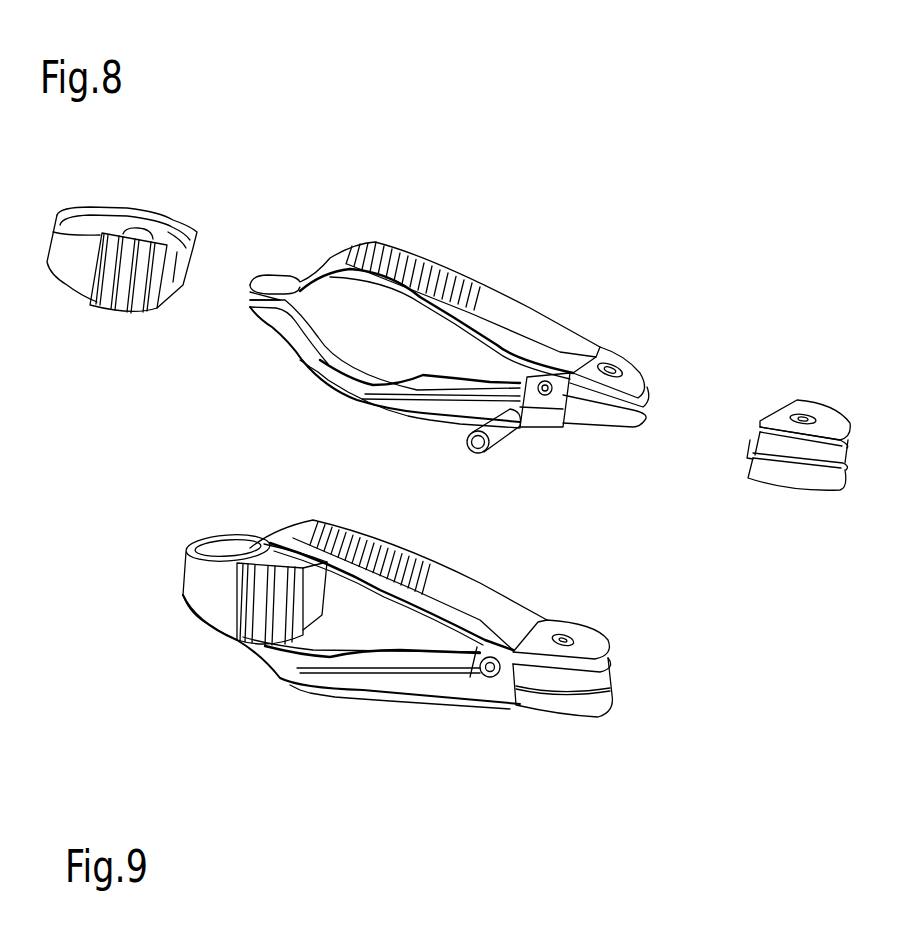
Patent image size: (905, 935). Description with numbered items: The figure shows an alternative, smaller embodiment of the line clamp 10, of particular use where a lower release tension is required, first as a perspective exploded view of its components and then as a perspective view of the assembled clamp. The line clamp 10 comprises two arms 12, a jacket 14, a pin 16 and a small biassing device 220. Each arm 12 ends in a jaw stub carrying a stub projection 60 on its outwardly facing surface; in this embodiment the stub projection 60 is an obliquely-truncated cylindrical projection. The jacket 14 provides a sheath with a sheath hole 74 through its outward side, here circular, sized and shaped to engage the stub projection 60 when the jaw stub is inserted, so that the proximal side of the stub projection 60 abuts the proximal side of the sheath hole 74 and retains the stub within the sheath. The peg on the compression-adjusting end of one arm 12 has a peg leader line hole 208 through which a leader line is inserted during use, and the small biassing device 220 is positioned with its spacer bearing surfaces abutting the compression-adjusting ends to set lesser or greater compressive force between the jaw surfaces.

In FIG. 9, the line clamp 10 is at (382, 737).
In FIG. 9, the arm 12 is at (322, 520).
In FIG. 8, the jacket 14 is at (737, 497).
In FIG. 9, the jacket 14 is at (610, 668).
In FIG. 8, the pin 16 is at (500, 433).
In FIG. 9, the pin 16 is at (490, 668).
In FIG. 8, the stub projection 60 is at (608, 371).
In FIG. 8, the sheath hole 74 is at (803, 417).
In FIG. 8, the peg leader line hole 208 is at (278, 283).
In FIG. 8, the small biassing device 220 is at (58, 283).
In FIG. 9, the small biassing device 220 is at (182, 597).